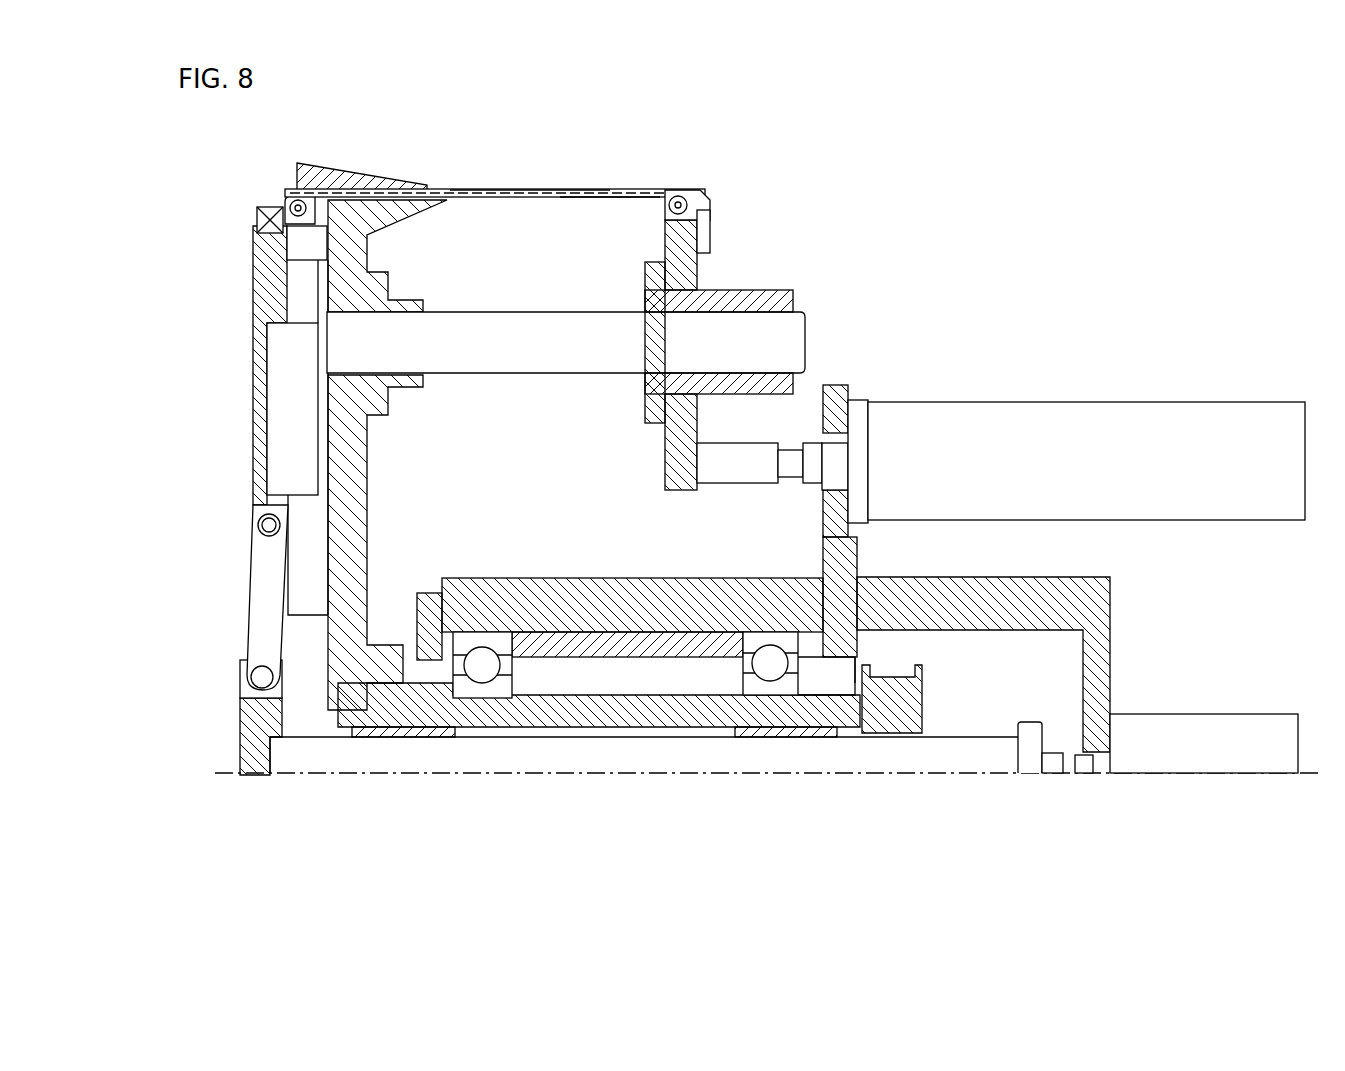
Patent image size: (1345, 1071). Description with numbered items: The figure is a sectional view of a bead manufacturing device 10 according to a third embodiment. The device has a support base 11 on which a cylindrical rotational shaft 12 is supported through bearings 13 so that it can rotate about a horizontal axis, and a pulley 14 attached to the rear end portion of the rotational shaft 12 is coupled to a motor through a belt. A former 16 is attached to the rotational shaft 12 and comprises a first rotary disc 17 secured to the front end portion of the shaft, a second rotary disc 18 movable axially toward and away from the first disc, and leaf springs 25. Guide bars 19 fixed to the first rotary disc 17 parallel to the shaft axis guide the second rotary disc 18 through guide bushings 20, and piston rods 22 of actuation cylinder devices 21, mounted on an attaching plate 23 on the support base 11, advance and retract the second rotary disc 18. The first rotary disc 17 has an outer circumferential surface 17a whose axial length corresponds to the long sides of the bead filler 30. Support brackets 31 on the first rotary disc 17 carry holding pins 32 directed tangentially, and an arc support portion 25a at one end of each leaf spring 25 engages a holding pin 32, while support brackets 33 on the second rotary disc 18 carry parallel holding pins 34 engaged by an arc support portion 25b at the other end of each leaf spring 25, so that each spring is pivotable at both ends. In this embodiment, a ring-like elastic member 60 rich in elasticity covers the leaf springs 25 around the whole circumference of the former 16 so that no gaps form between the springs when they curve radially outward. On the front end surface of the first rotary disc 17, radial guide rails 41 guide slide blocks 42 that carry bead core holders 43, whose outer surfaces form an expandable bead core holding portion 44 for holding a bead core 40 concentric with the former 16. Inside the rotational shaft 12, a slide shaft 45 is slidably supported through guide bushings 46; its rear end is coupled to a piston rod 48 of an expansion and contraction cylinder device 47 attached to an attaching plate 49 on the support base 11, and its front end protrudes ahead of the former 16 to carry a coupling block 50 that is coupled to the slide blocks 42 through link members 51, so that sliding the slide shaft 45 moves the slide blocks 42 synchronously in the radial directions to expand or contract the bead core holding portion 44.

The bead manufacturing device 10 is at (908, 293).
The support base 11 is at (650, 577).
The rotational shaft 12 is at (600, 704).
The bearings 13 is at (482, 644).
The pulley 14 is at (922, 698).
The former 16 is at (470, 188).
The first rotary disc 17 is at (363, 485).
The outer circumferential surface 17a is at (395, 186).
The second rotary disc 18 is at (672, 458).
The guide bars 19 is at (548, 311).
The guide bushings 20 is at (763, 290).
The actuation cylinder devices 21 is at (1092, 401).
The piston rods 22 is at (815, 480).
The attaching plate 23 is at (857, 557).
The leaf springs 25 is at (595, 189).
The arc support portion 25a is at (270, 207).
The arc support portion 25b is at (690, 192).
The bead filler 30 is at (345, 178).
The support brackets 31 is at (297, 248).
The holding pins 32 is at (297, 200).
The support brackets 33 is at (708, 215).
The holding pins 34 is at (678, 199).
The bead core 40 is at (285, 206).
The guide rails 41 is at (300, 568).
The slide blocks 42 is at (275, 432).
The bead core holders 43 is at (258, 318).
The bead core holding portion 44 is at (258, 218).
The slide shaft 45 is at (598, 760).
The guide bushings 46 is at (400, 738).
The expansion and contraction cylinder device 47 is at (1245, 719).
The piston rod 48 is at (1098, 774).
The attaching plate 49 is at (1110, 605).
The coupling block 50 is at (243, 742).
The link members 51 is at (255, 628).
The ring-like elastic member 60 is at (527, 189).